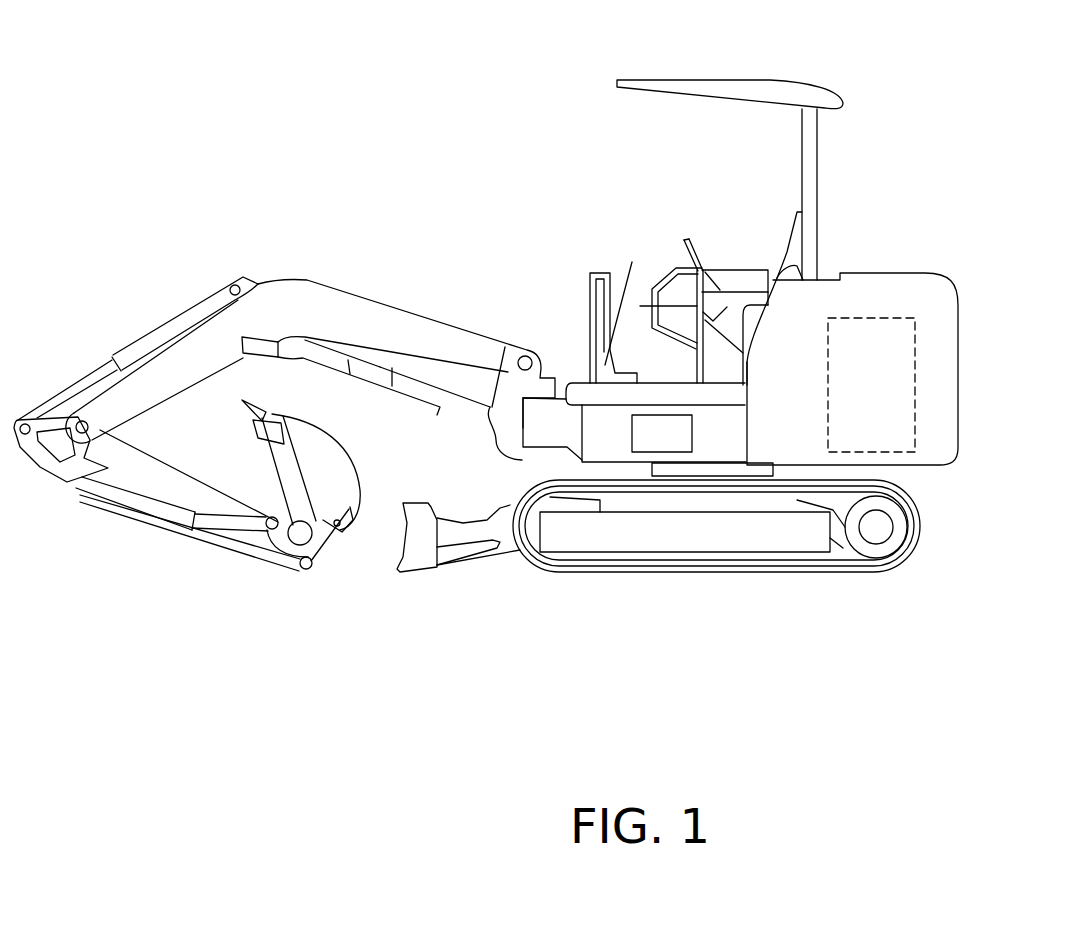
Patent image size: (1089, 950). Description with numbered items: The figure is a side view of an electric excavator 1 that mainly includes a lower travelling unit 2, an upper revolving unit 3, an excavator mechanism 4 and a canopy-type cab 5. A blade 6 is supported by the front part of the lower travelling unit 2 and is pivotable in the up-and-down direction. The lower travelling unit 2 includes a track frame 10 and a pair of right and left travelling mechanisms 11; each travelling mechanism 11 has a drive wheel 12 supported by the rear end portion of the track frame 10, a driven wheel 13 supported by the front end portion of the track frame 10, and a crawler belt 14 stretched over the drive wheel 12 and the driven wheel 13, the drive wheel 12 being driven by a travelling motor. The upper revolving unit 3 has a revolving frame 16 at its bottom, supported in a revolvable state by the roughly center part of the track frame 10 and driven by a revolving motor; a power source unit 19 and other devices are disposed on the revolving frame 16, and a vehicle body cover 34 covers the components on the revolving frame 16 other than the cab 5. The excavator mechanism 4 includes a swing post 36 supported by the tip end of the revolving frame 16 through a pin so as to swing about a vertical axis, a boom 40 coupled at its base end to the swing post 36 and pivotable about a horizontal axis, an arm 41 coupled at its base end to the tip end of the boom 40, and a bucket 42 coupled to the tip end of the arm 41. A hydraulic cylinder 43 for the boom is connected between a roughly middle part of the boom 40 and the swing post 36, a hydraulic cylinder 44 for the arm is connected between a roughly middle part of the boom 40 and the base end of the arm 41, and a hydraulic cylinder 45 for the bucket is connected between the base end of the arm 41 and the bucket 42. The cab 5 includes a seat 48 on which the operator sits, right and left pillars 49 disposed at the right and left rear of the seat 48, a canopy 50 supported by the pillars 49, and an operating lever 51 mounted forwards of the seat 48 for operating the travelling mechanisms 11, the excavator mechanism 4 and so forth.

The electric excavator 1 is at (931, 112).
The lower travelling unit 2 is at (950, 501).
The upper revolving unit 3 is at (960, 268).
The excavator mechanism 4 is at (275, 222).
The canopy-type cab 5 is at (627, 163).
The blade 6 is at (417, 517).
The track frame 10 is at (625, 534).
The travelling mechanism 11 is at (912, 556).
The drive wheel 12 is at (870, 546).
The driven wheel 13 is at (515, 553).
The crawler belt 14 is at (717, 573).
The revolving frame 16 is at (605, 378).
The power source unit 19 is at (914, 318).
The vehicle body cover 34 is at (960, 358).
The swing post 36 is at (513, 398).
The boom 40 is at (323, 307).
The arm 41 is at (145, 467).
The bucket 42 is at (327, 437).
The hydraulic cylinder for the boom 43 is at (461, 409).
The hydraulic cylinder for the arm 44 is at (152, 327).
The hydraulic cylinder for the bucket 45 is at (134, 505).
The seat 48 is at (740, 302).
The pillar 49 is at (810, 172).
The canopy 50 is at (774, 80).
The operating lever 51 is at (684, 238).